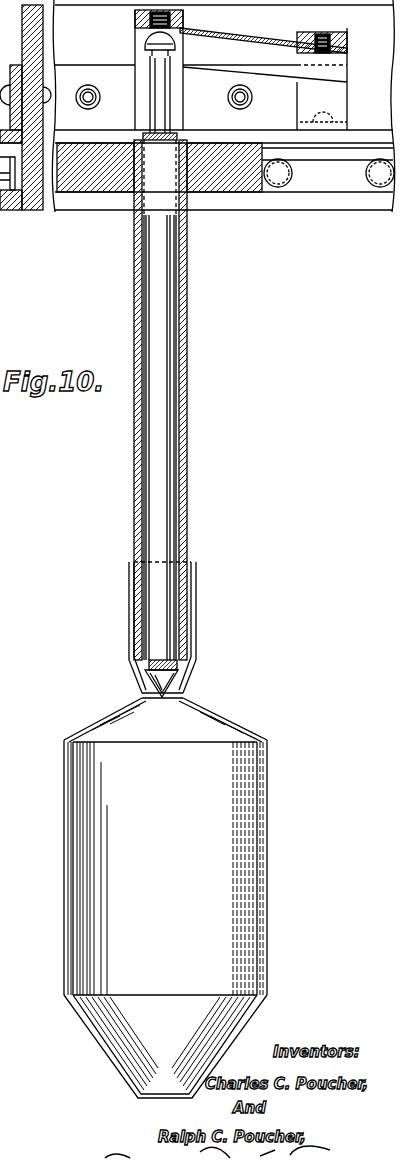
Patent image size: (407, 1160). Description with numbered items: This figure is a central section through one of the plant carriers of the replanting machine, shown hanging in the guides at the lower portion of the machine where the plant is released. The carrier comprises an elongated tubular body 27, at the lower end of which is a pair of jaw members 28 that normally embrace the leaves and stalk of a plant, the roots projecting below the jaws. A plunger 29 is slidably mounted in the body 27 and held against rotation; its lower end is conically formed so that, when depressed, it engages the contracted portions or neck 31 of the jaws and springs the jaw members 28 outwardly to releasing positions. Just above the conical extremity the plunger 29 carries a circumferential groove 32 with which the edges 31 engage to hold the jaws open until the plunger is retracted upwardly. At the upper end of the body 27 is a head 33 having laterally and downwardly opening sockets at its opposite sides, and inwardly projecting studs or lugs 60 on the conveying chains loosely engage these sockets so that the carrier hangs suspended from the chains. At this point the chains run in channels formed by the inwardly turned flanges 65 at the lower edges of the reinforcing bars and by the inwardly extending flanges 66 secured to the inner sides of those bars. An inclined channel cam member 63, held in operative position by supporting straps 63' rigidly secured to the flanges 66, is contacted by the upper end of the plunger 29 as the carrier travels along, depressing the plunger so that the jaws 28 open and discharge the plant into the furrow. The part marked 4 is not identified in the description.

The frame wall 4 is at (27, 28).
The inclined channel cam member 63 is at (241, 31).
The supporting straps 63' is at (191, 99).
The inwardly extending flanges 66 is at (363, 138).
The head 33 is at (227, 182).
The inwardly projecting studs or lugs 60 is at (285, 182).
The inwardly turned flanges 65 is at (267, 203).
The plunger 29 is at (157, 350).
The elongated tubular body 27 is at (188, 517).
The circumferential groove 32 is at (173, 665).
The contracted portions or neck 31 is at (115, 712).
The jaw members 28 is at (247, 738).